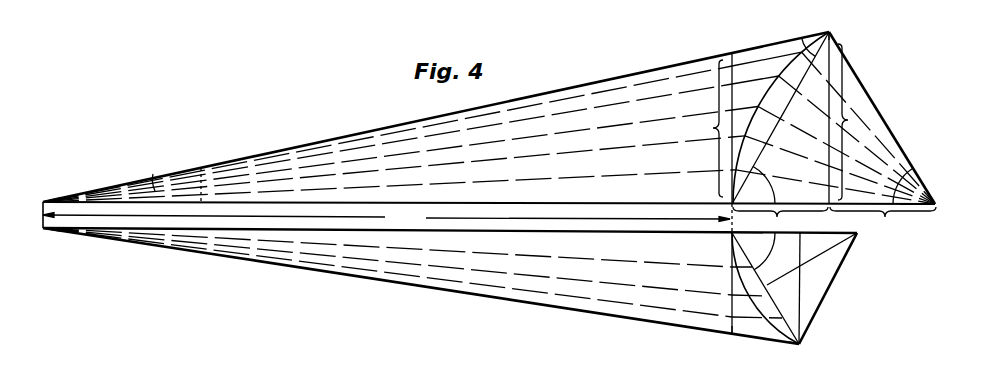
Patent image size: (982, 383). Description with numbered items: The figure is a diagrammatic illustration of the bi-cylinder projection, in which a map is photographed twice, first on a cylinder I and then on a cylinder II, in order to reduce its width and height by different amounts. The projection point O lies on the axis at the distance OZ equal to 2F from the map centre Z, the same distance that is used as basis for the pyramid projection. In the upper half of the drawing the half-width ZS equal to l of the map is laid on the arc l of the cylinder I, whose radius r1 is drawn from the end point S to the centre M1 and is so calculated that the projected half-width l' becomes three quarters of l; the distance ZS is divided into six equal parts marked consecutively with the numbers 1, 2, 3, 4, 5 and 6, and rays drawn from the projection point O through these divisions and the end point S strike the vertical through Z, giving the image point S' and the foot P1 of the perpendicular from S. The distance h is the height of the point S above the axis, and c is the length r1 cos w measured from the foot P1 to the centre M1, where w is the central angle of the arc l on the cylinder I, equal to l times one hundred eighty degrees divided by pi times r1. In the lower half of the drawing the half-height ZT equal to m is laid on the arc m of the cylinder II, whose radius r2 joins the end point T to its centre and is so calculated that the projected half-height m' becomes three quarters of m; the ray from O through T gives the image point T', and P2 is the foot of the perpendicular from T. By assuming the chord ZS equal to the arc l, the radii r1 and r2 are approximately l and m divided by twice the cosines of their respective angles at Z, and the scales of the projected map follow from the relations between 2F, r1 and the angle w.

The projection point O is at (44, 215).
The end point of map width S is at (828, 37).
The projected image of point S S' is at (733, 121).
The map centre Z is at (724, 218).
The end point of map height T is at (796, 352).
The projected image of point T T' is at (728, 340).
The foot of perpendicular from S P1 is at (831, 142).
The foot of perpendicular from T P2 is at (801, 280).
The center of curvature of surface l M1 is at (931, 206).
The half-width of the map l is at (781, 118).
The half-height of the map m is at (765, 288).
The projected half-height m' is at (387, 281).
The height of lens surface h is at (849, 122).
The radius of cylinder I r1 is at (882, 118).
The radius of cylinder II r2 is at (828, 288).
The distance r1 cos omega c is at (883, 220).
The distance of projection point from map centre 2F is at (386, 216).
The angle omega w is at (905, 186).
The cylinder I is at (882, 69).
The cylinder II is at (870, 262).
The division mark 1 is at (720, 128).
The division mark 2 is at (387, 174).
The division mark 3 is at (387, 160).
The division mark 4 is at (387, 147).
The division mark 5 is at (387, 136).
The division mark 6 is at (387, 130).